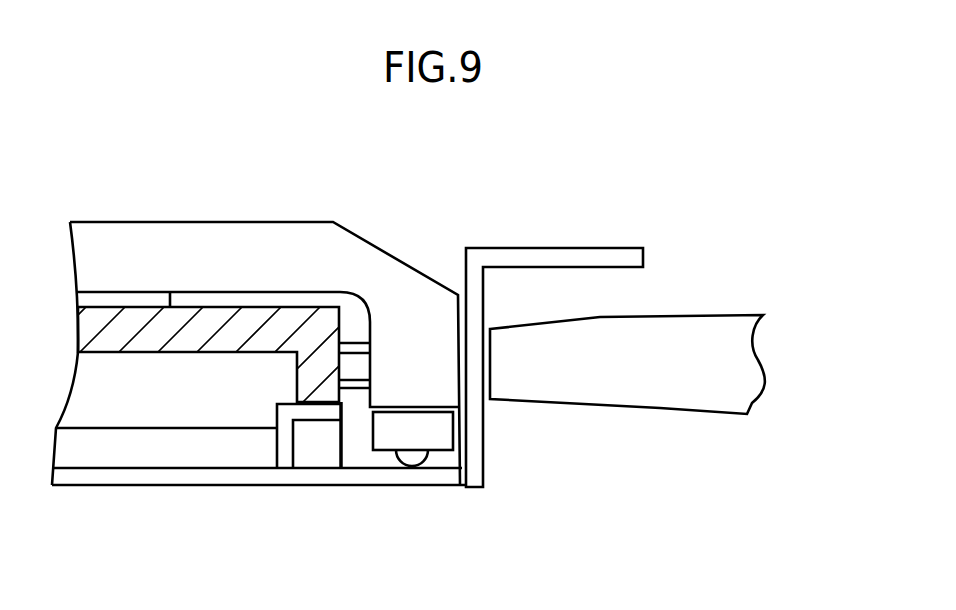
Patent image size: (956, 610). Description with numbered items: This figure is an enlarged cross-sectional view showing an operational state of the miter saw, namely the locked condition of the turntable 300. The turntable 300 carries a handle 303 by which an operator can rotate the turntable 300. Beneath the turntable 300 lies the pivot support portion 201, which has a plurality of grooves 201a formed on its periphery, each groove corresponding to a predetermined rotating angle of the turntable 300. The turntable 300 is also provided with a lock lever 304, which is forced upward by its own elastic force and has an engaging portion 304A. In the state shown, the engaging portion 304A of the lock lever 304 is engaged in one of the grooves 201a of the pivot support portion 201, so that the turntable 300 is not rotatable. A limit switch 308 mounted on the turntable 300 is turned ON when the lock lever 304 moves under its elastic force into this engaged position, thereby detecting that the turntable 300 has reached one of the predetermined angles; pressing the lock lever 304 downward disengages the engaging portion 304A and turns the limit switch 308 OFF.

The turntable 300 is at (120, 243).
The pivot support portion 201 is at (195, 325).
The grooves 201a is at (342, 428).
The lock lever 304 is at (560, 258).
The engaging portion 304A is at (290, 437).
The handle 303 is at (700, 338).
The limit switch 308 is at (417, 433).